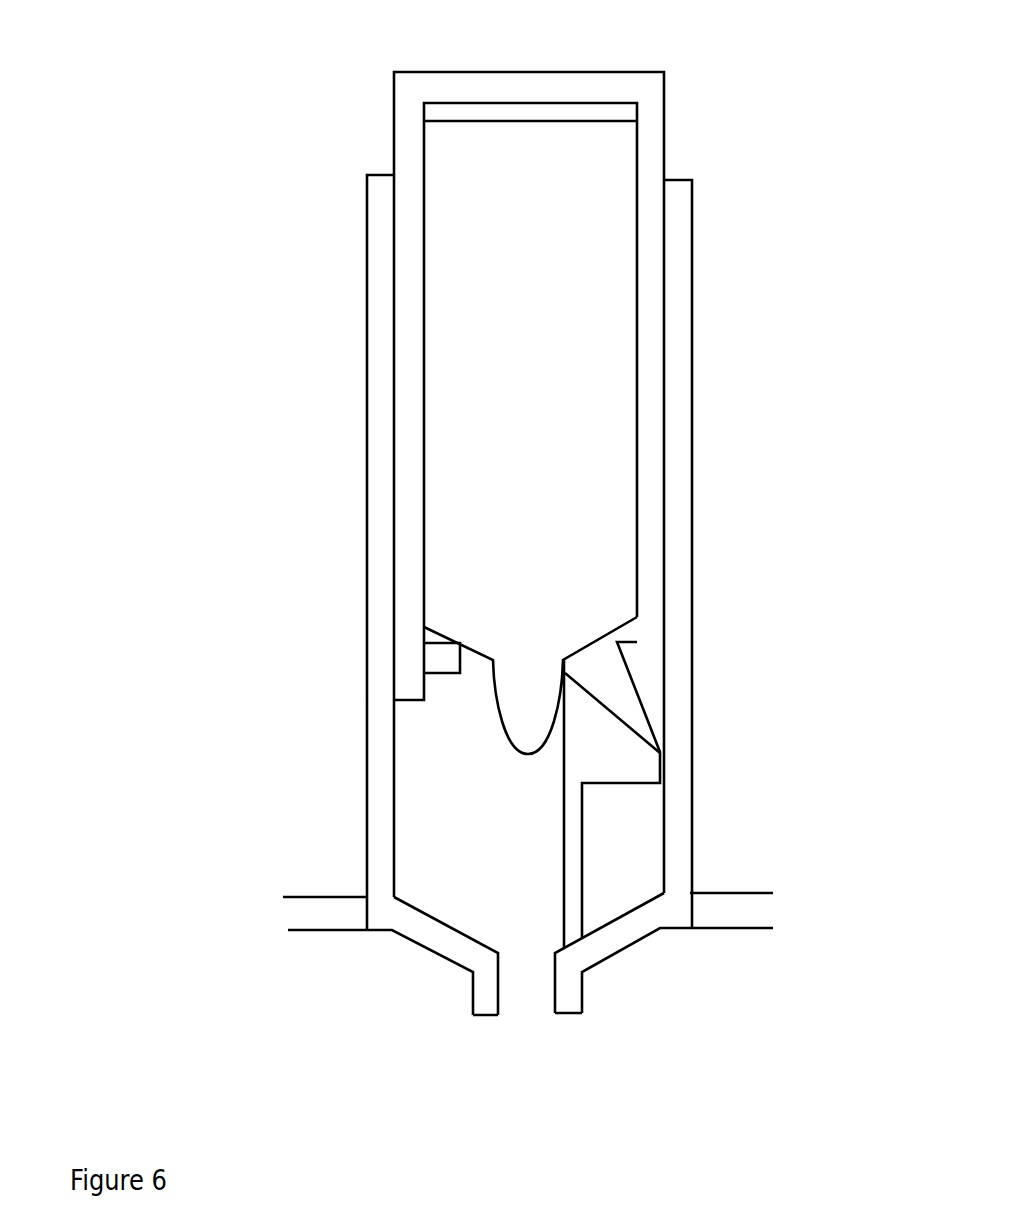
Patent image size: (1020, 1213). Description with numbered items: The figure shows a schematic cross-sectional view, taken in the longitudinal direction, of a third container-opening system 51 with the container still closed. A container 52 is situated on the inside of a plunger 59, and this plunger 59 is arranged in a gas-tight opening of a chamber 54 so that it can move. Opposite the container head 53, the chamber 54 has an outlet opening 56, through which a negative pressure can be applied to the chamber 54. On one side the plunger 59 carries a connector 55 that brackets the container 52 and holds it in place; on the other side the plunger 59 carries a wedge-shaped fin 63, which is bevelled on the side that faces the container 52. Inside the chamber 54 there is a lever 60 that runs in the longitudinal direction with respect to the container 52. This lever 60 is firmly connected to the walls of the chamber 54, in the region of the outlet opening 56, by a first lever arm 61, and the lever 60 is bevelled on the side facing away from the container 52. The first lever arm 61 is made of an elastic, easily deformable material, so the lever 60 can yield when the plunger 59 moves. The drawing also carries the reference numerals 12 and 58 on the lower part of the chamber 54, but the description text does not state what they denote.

The housing 12 is at (380, 874).
The container-opening system 51 is at (758, 70).
The container 52 is at (506, 338).
The container head 53 is at (543, 724).
The chamber 54 is at (374, 406).
The connector 55 is at (437, 659).
The outlet opening 56 is at (513, 992).
The inlet 58 is at (309, 909).
The plunger 59 is at (663, 151).
The lever 60 is at (613, 734).
The first lever arm 61 is at (584, 932).
The wedge-shaped fin 63 is at (662, 680).